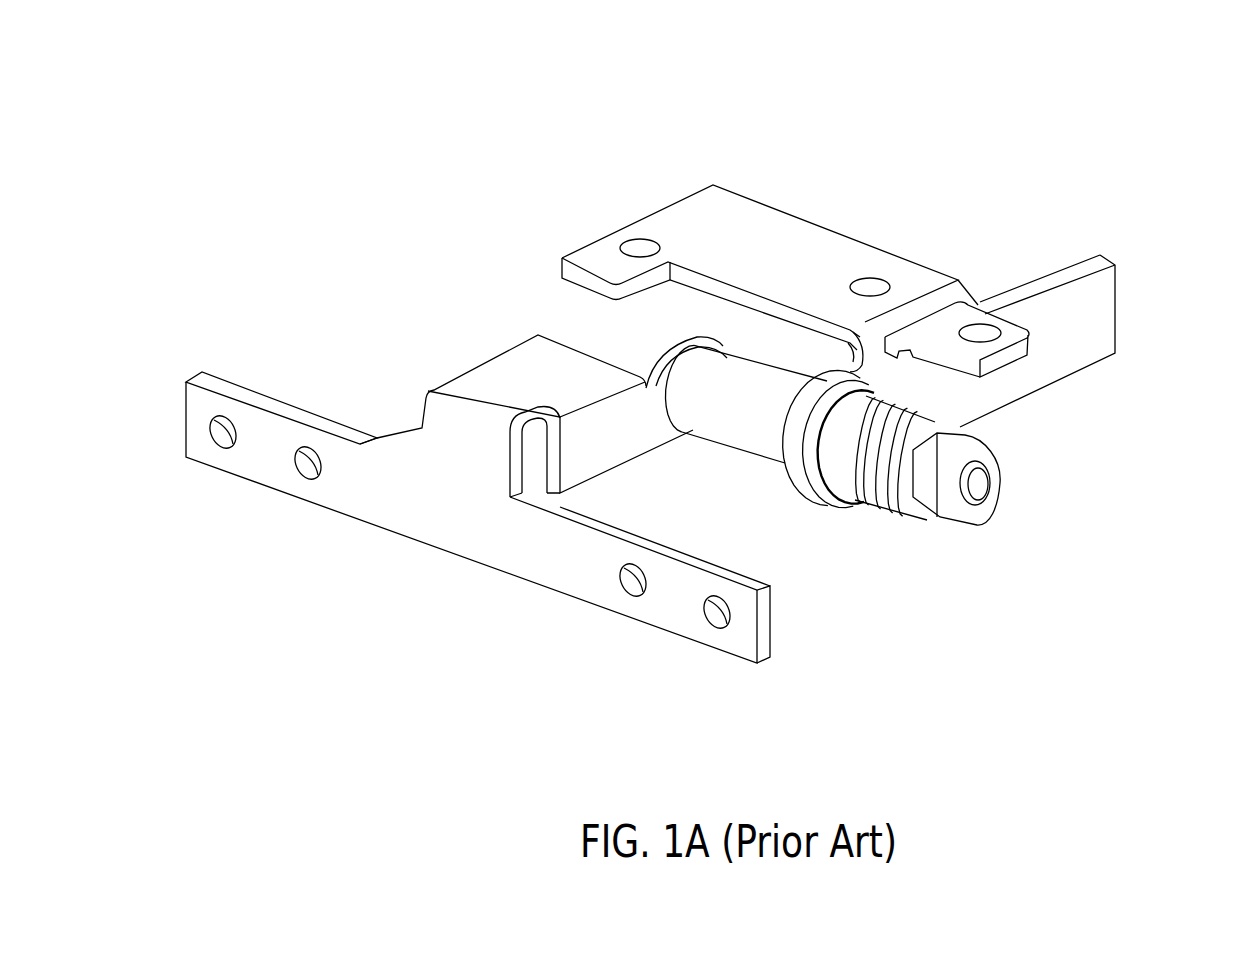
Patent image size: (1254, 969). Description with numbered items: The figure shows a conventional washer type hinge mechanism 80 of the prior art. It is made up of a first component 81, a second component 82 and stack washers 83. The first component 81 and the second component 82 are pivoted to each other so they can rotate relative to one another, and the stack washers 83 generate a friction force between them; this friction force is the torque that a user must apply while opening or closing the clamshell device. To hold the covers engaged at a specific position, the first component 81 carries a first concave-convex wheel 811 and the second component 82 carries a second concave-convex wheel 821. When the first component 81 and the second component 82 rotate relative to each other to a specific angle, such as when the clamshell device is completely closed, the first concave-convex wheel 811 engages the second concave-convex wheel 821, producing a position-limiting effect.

The washer type hinge mechanism 80 is at (1157, 129).
The first component 81 is at (795, 368).
The first concave-convex wheel 811 is at (838, 505).
The second component 82 is at (650, 478).
The second concave-convex wheel 821 is at (870, 503).
The stack washers 83 is at (908, 528).